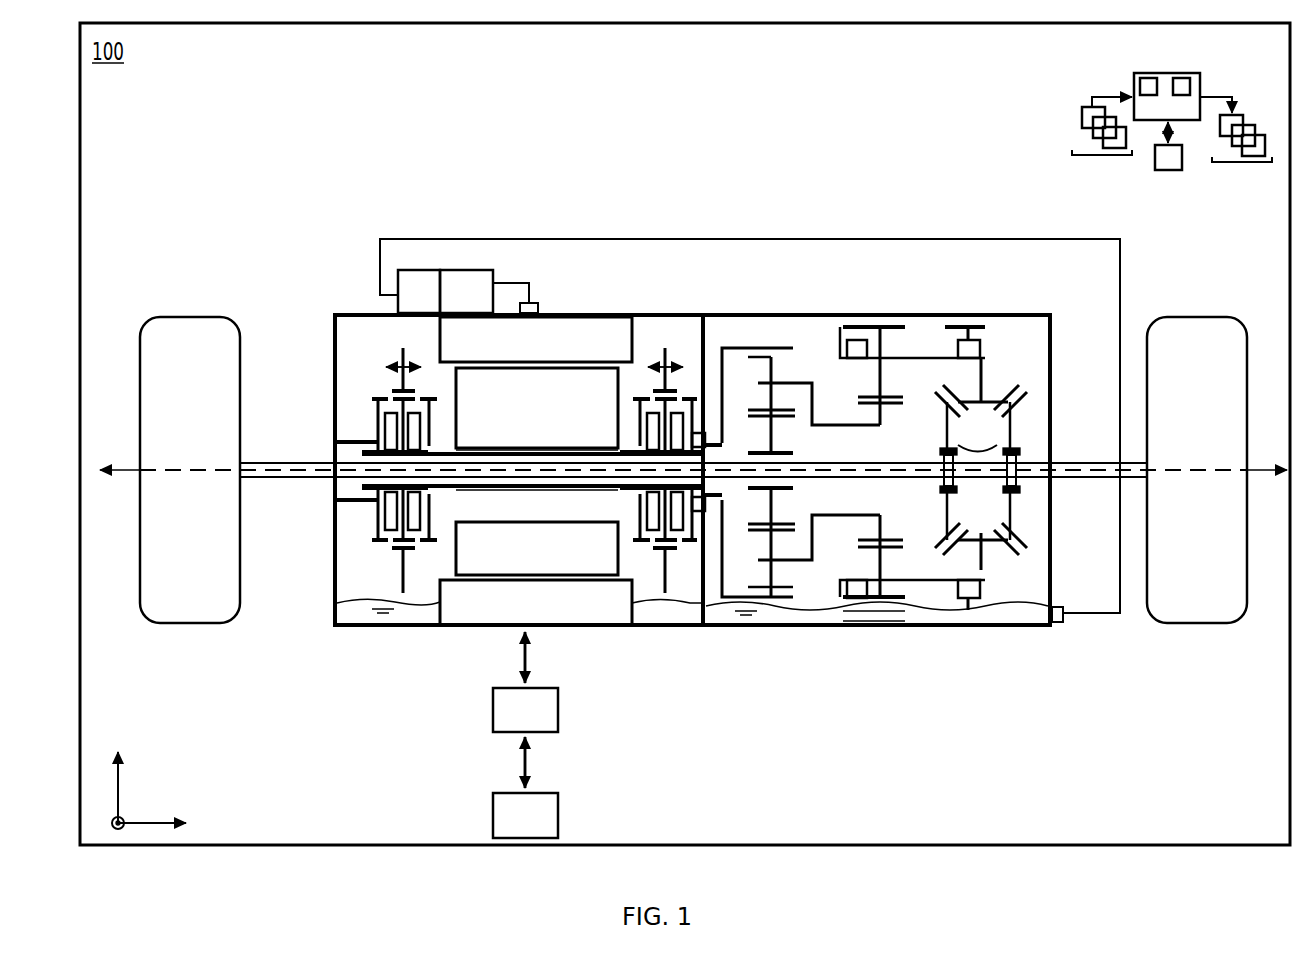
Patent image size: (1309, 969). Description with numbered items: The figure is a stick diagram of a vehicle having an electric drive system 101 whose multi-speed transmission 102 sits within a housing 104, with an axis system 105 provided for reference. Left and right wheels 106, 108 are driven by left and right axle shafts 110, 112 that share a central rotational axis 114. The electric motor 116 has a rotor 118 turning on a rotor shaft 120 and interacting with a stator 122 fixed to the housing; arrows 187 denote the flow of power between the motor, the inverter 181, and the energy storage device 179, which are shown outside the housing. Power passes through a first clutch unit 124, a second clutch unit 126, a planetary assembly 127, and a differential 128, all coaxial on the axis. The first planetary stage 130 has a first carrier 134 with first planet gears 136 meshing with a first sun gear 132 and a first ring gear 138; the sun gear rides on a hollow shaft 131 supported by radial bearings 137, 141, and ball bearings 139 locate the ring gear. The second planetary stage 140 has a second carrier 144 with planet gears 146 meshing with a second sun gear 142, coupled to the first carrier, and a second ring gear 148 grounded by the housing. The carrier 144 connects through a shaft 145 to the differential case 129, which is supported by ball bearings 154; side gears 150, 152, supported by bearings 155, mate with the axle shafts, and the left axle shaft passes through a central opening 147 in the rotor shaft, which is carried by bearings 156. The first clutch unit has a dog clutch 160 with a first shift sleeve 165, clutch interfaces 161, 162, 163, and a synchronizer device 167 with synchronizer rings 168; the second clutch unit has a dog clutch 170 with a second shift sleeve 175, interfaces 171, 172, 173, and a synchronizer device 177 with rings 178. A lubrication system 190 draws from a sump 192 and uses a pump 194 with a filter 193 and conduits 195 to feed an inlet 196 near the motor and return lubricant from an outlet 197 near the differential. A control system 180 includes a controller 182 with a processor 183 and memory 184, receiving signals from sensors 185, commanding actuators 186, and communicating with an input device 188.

The electric drive system 101 is at (210, 183).
The multi-speed transmission 102 is at (303, 246).
The housing 104 is at (333, 336).
The axis system 105 is at (173, 766).
The left wheel 106 is at (178, 623).
The right wheel 108 is at (1215, 623).
The left axle shaft 110 is at (305, 465).
The right axle shaft 112 is at (1058, 462).
The central rotational axis 114 is at (122, 470).
The electric motor 116 is at (585, 642).
The rotor 118 is at (552, 400).
The rotor shaft 120 is at (470, 448).
The stator 122 is at (547, 363).
The first clutch unit 124 is at (392, 585).
The second clutch unit 126 is at (663, 628).
The planetary assembly 127 is at (904, 517).
The differential 128 is at (1030, 382).
The differential case 129 is at (1018, 440).
The first planetary stage 130 is at (791, 492).
The hollow shaft 131 is at (793, 455).
The first sun gear 132 is at (766, 426).
The first carrier 134 is at (796, 381).
The first planet gears 136 is at (783, 352).
The radial bearings 137 is at (355, 490).
The first ring gear 138 is at (795, 325).
The ball bearings 139 is at (712, 504).
The second planetary stage 140 is at (934, 492).
The radial bearings 141 is at (707, 498).
The second sun gear 142 is at (892, 405).
The second carrier 144 is at (983, 366).
The shaft 145 is at (987, 392).
The planet gears 146 is at (898, 336).
The central opening 147 is at (540, 462).
The second ring gear 148 is at (900, 326).
The side gear 150 is at (940, 478).
The side gear 152 is at (1030, 480).
The ball bearings 154 is at (870, 590).
The bearings 155 is at (994, 446).
The bearings 156 is at (600, 496).
The dog clutch 160 is at (382, 434).
The clutch interface 161 is at (342, 520).
The clutch interface 162 is at (406, 535).
The clutch interface 163 is at (430, 528).
The first shift sleeve 165 is at (398, 357).
The synchronizer device 167 is at (372, 390).
The synchronizer rings 168 is at (385, 432).
The dog clutch 170 is at (627, 440).
The clutch interface 171 is at (636, 544).
The clutch interface 172 is at (648, 552).
The clutch interface 173 is at (682, 550).
The second shift sleeve 175 is at (670, 352).
The synchronizer device 177 is at (641, 387).
The synchronizer rings 178 is at (650, 420).
The energy storage device 179 is at (493, 815).
The control system 180 is at (1062, 94).
The inverter 181 is at (493, 710).
The controller 182 is at (1148, 75).
The processor 183 is at (1140, 86).
The memory 184 is at (1190, 88).
The sensors 185 is at (1102, 145).
The actuators 186 is at (1236, 149).
The arrows 187 is at (520, 660).
The input device 188 is at (1168, 172).
The lubrication system 190 is at (497, 182).
The sump 192 is at (944, 618).
The filter 193 is at (435, 305).
The pump 194 is at (480, 305).
The conduits 195 is at (491, 241).
The inlet 196 is at (538, 307).
The outlet 197 is at (1058, 623).